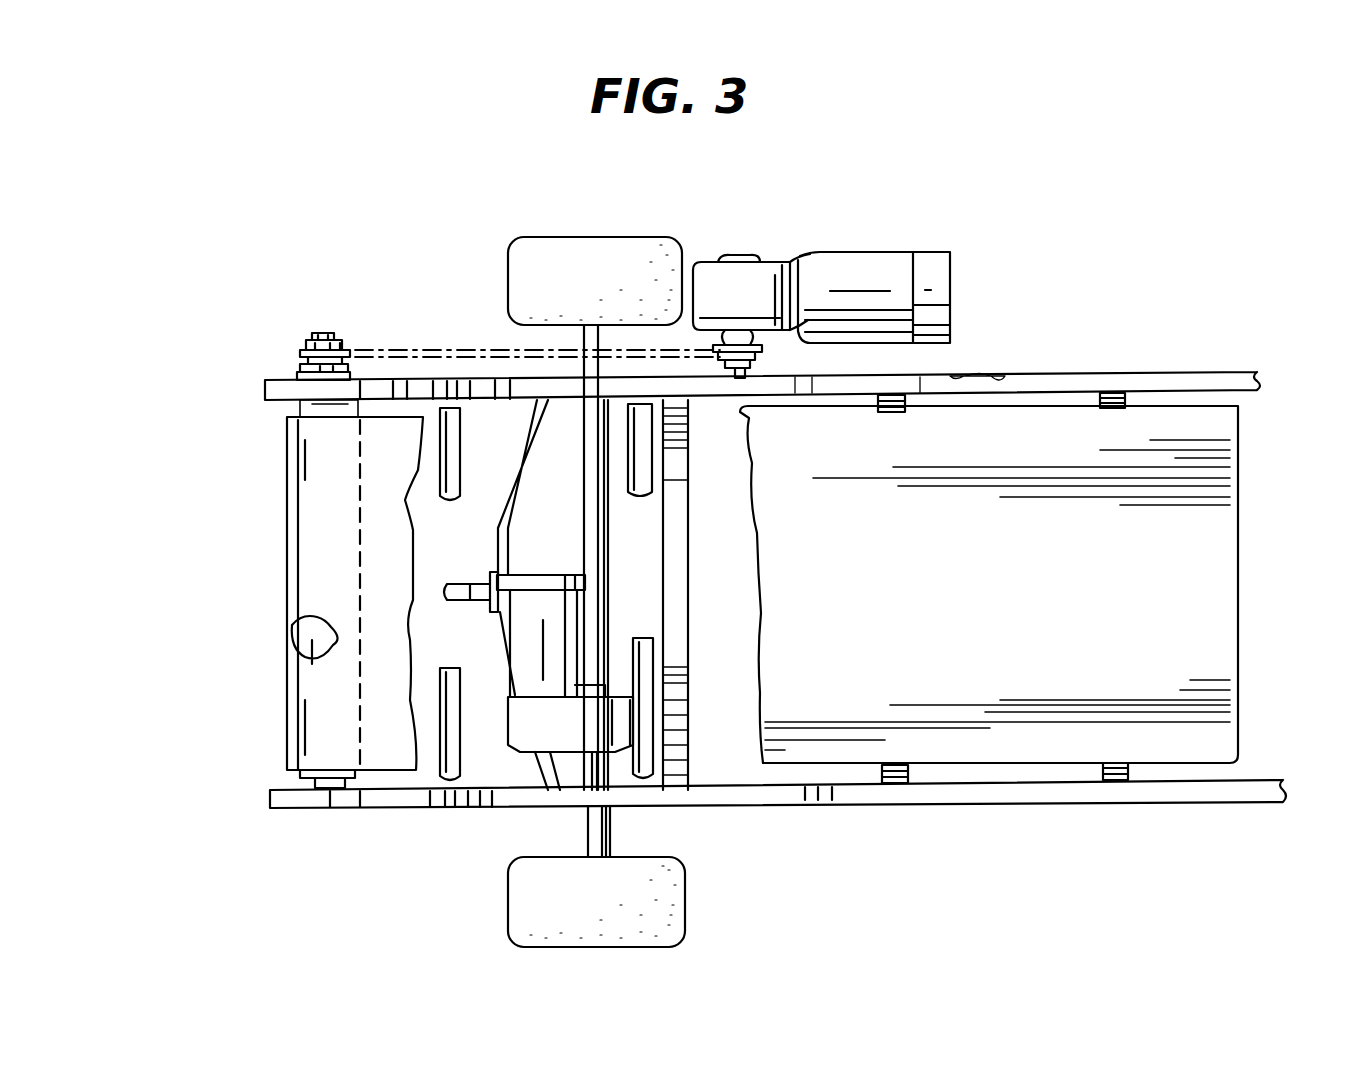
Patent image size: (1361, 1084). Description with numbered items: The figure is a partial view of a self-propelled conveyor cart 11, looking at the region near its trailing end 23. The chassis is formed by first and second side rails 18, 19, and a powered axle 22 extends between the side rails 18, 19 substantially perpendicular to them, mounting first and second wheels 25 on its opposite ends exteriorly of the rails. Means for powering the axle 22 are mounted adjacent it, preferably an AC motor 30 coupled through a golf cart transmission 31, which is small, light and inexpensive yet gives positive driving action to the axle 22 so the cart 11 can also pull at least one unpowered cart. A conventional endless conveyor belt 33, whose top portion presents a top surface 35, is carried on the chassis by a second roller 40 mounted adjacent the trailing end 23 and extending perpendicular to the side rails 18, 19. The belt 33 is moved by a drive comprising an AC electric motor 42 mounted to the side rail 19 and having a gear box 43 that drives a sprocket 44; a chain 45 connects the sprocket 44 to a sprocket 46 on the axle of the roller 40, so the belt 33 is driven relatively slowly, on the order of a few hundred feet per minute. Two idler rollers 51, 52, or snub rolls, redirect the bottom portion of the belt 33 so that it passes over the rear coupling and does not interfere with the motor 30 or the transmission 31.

The conveyor cart 11 is at (1226, 332).
The first side rail 18 is at (1186, 800).
The second side rail 19 is at (1143, 378).
The axle 22 is at (590, 538).
The trailing end 23 is at (266, 830).
The wheels 25 is at (591, 256).
The AC motor 30 is at (523, 632).
The golf cart transmission 31 is at (615, 725).
The endless conveyor belt 33 is at (946, 728).
The top surface 35 is at (1028, 750).
The second roller 40 is at (300, 660).
The AC electric motor 42 is at (868, 268).
The gear box 43 is at (762, 283).
The sprocket 44 is at (718, 376).
The chain 45 is at (460, 348).
The sprocket 46 is at (302, 352).
The idler roller 51 is at (430, 810).
The idler roller 52 is at (640, 742).